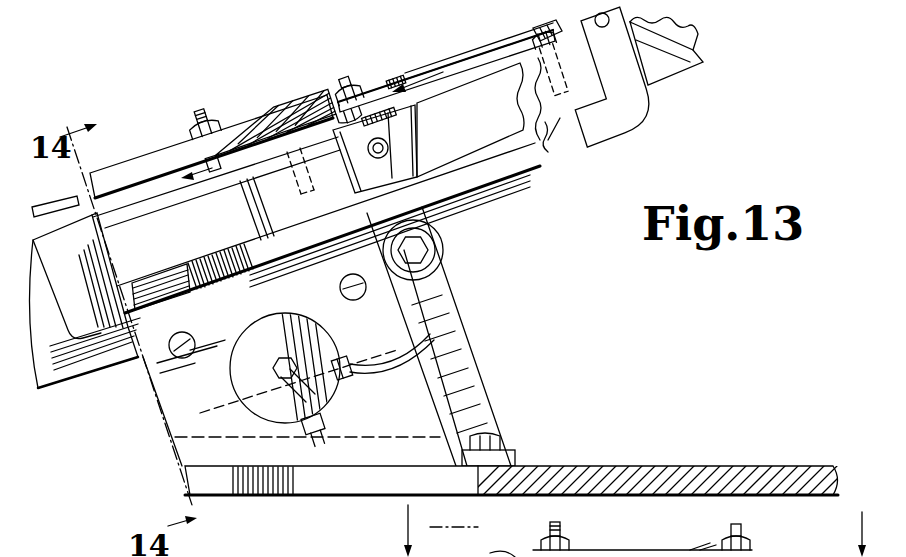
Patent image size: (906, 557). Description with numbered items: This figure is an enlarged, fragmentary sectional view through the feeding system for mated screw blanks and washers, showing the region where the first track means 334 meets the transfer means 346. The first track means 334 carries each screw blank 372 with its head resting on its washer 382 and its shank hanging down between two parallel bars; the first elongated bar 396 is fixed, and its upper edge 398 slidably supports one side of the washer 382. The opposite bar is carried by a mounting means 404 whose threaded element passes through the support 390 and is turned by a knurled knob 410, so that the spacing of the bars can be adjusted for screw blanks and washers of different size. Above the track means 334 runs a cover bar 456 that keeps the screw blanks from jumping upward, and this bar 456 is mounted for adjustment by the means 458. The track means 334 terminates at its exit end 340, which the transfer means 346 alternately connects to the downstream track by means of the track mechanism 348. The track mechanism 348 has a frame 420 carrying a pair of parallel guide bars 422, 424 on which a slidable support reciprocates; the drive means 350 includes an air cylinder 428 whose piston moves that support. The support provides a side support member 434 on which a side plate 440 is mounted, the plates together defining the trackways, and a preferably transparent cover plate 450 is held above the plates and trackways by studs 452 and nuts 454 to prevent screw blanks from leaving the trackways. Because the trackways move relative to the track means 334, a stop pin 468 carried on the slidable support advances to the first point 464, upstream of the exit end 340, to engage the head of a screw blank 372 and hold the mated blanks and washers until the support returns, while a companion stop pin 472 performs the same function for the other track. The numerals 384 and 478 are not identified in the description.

The first track means 334 is at (686, 94).
The exit end 340 is at (431, 56).
The transfer means 346 is at (618, 315).
The track mechanism 348 is at (265, 95).
The drive means 350 is at (214, 395).
The screw blank 372 is at (296, 118).
The washer 382 is at (340, 86).
The base plate 384 is at (715, 466).
The support 390 is at (487, 413).
The first elongated bar 396 is at (694, 56).
The upper edge 398 is at (638, 16).
The mounting means 404 is at (453, 232).
The knurled knob 410 is at (445, 252).
The frame 420 is at (183, 391).
The guide bar 422 is at (196, 331).
The guide bar 424 is at (356, 300).
The air cylinder 428 is at (340, 393).
The side support member 434 is at (172, 251).
The side plate 440 is at (185, 190).
The cover plate 450 is at (123, 170).
The stud 452 is at (195, 108).
The nut 454 is at (213, 112).
The cover bar 456 is at (470, 58).
The adjustment means 458 is at (366, 78).
The first point 464 is at (603, 8).
The stop pin 468 is at (603, 28).
The stop pin 472 is at (485, 549).
The J-clamp 478 is at (630, 107).